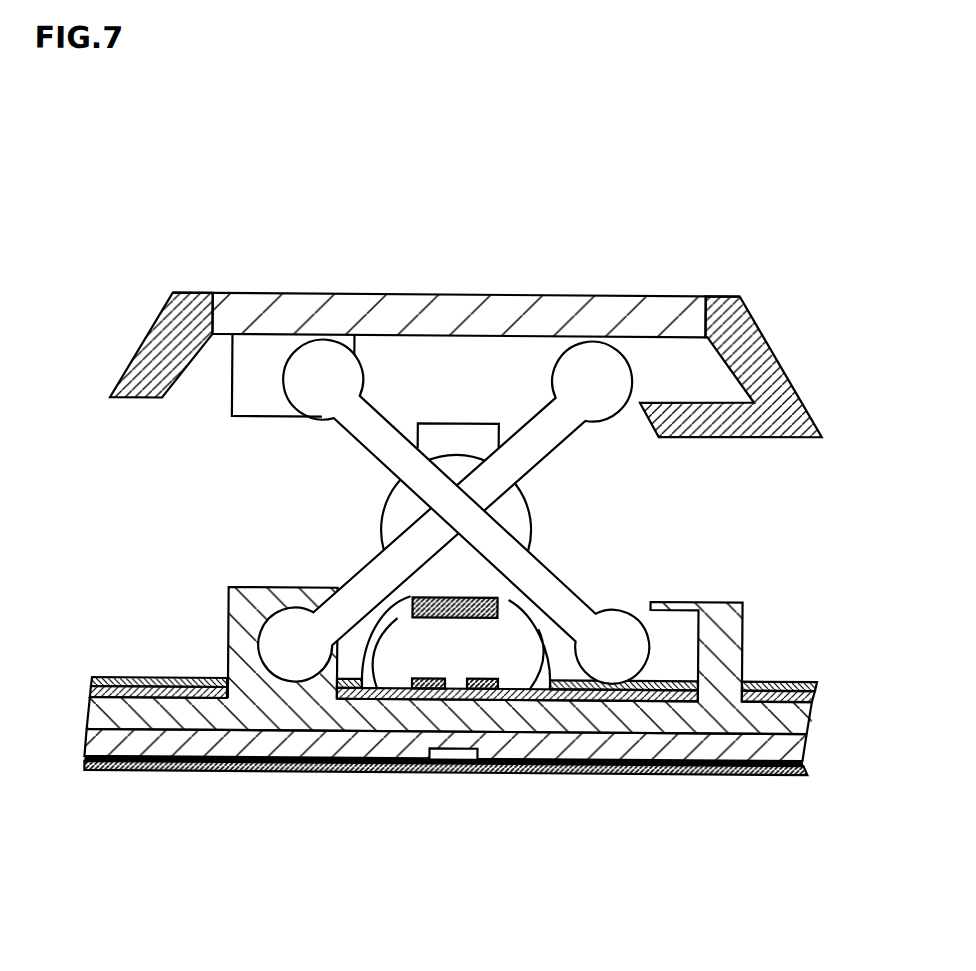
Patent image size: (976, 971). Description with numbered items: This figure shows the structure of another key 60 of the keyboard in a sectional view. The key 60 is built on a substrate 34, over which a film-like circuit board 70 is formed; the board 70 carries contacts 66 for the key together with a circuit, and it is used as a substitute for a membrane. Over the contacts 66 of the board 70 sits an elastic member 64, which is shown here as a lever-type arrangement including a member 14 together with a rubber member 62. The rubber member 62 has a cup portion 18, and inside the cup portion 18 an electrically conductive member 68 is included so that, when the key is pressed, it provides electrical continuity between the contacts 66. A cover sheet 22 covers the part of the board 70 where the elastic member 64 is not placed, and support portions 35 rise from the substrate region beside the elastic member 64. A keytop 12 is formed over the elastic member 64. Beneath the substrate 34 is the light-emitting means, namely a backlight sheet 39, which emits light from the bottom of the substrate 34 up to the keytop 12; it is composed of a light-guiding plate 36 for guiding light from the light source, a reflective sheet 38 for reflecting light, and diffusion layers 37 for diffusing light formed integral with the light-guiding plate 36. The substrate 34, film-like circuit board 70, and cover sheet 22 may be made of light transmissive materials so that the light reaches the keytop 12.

The key 60 is at (569, 175).
The keytop 12 is at (608, 318).
The first lever member 14 is at (380, 441).
The rubber member 62 is at (402, 506).
The elastic member 64 is at (345, 511).
The cup portion 18 is at (540, 652).
The electrically conductive member 68 is at (490, 616).
The contacts 66 is at (438, 687).
The support portions of housing 35 is at (260, 611).
The cover sheet 22 is at (148, 680).
The film-like circuit board 70 is at (802, 680).
The substrate 34 is at (123, 710).
The light-guiding plate 36 is at (217, 746).
The reflective sheet 38 is at (293, 770).
The diffusion layers 37 is at (148, 862).
The backlight sheet 39 is at (445, 840).